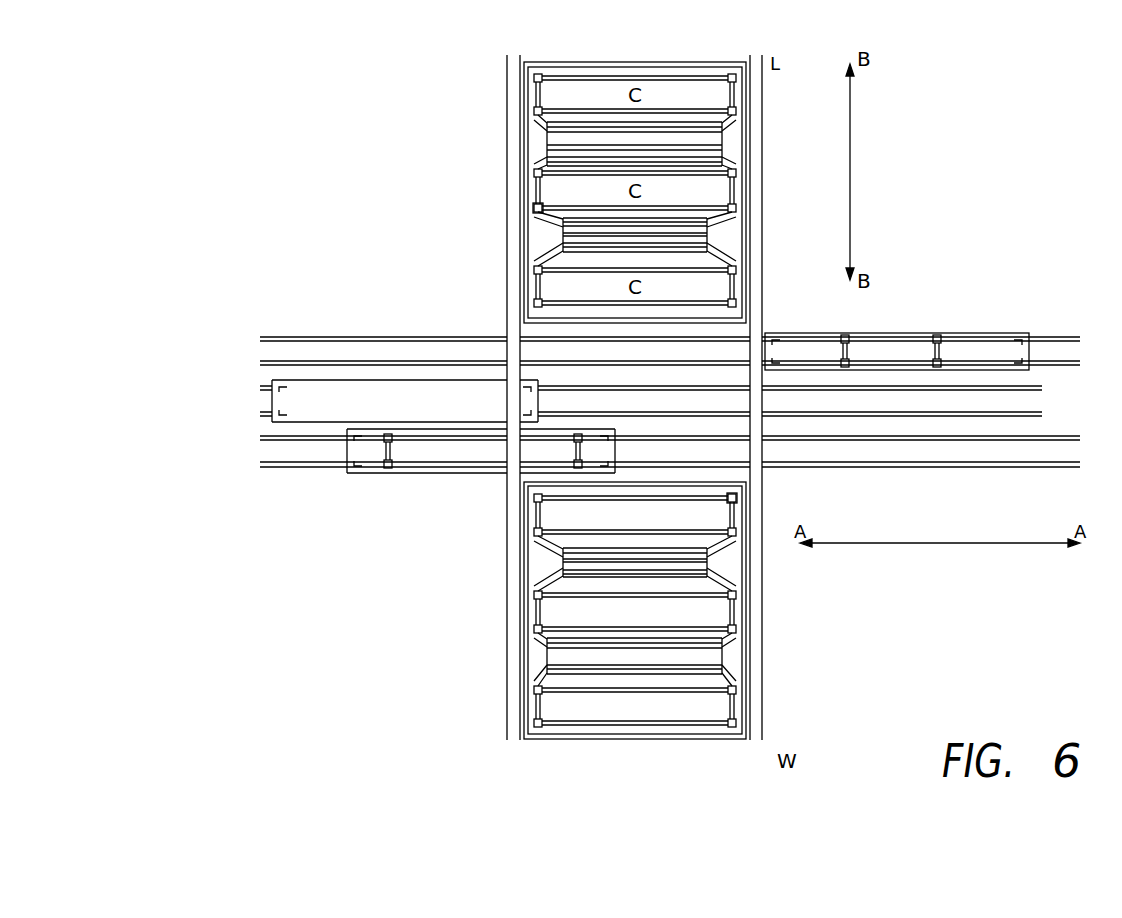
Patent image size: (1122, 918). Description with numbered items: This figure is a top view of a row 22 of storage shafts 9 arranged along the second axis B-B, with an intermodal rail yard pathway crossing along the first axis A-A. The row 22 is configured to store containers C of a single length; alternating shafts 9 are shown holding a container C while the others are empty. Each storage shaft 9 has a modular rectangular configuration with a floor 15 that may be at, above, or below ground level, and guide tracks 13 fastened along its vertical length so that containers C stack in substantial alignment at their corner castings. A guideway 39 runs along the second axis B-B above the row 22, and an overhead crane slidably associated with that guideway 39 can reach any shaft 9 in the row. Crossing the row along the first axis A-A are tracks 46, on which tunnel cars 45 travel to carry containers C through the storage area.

The storage shaft 9 is at (748, 568).
The guide track 13 is at (532, 216).
The floor 15 is at (625, 143).
The row 22 is at (634, 748).
The guideway 39 is at (510, 297).
The tunnel car 45 is at (987, 333).
The track 46 is at (292, 336).